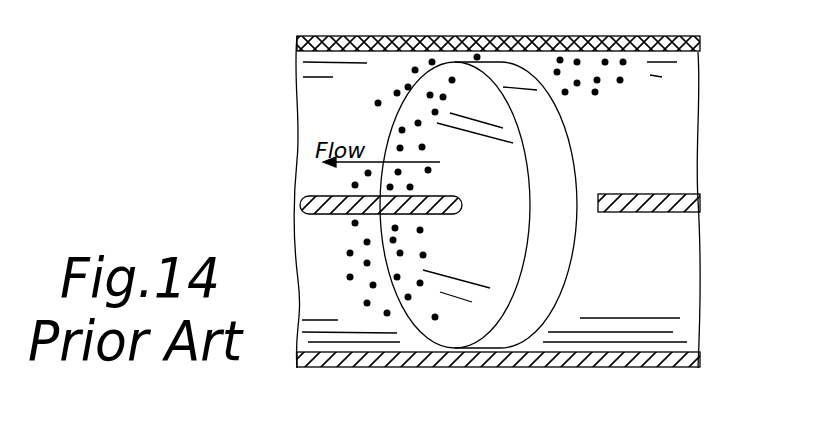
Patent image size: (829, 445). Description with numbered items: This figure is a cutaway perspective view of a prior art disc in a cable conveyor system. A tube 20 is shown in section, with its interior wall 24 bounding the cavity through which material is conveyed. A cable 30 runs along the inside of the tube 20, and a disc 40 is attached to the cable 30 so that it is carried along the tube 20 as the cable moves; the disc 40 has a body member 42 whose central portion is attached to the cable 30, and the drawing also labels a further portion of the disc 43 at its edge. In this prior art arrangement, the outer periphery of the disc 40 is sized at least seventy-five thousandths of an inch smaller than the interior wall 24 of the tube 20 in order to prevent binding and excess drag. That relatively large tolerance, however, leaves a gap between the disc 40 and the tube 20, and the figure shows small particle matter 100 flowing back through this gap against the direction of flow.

The small particle matter 100 is at (697, 80).
The tube 20 is at (408, 367).
The interior wall 24 is at (630, 335).
The cable 30 is at (627, 213).
The disc 40 is at (606, 160).
The body member 42 is at (480, 194).
The disc edge 43 is at (565, 150).